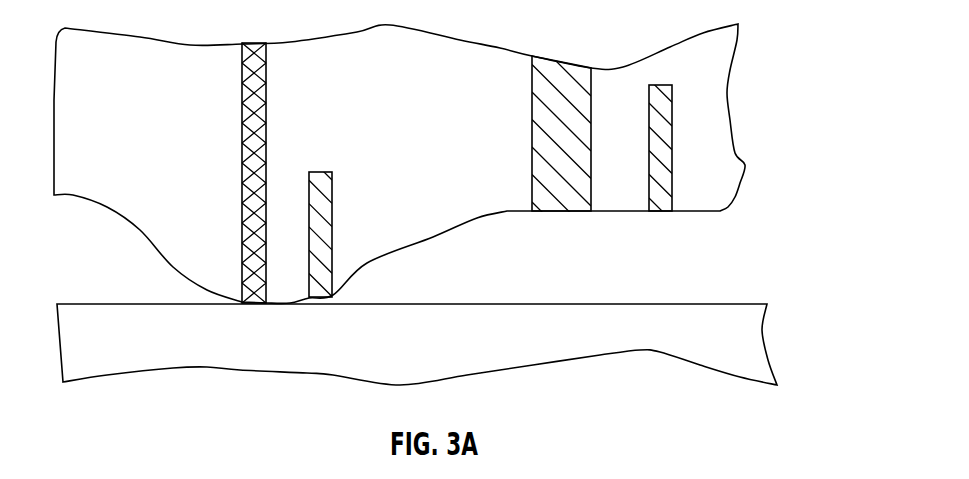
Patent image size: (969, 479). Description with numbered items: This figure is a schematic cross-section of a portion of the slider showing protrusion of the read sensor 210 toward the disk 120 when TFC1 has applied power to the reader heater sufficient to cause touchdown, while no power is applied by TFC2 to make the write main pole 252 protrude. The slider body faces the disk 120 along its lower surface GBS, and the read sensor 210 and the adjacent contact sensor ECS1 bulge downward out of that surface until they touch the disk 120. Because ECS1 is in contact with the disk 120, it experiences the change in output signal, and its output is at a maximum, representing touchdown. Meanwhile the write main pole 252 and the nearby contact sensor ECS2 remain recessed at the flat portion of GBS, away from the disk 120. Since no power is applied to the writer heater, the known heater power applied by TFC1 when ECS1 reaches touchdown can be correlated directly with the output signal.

The read sensor 210 is at (253, 123).
The write main pole 252 is at (545, 115).
The first embedded contact sensor ECS1 is at (322, 172).
The second embedded contact sensor ECS2 is at (672, 125).
The gas bearing surface GBS is at (683, 211).
The disk 120 is at (752, 342).